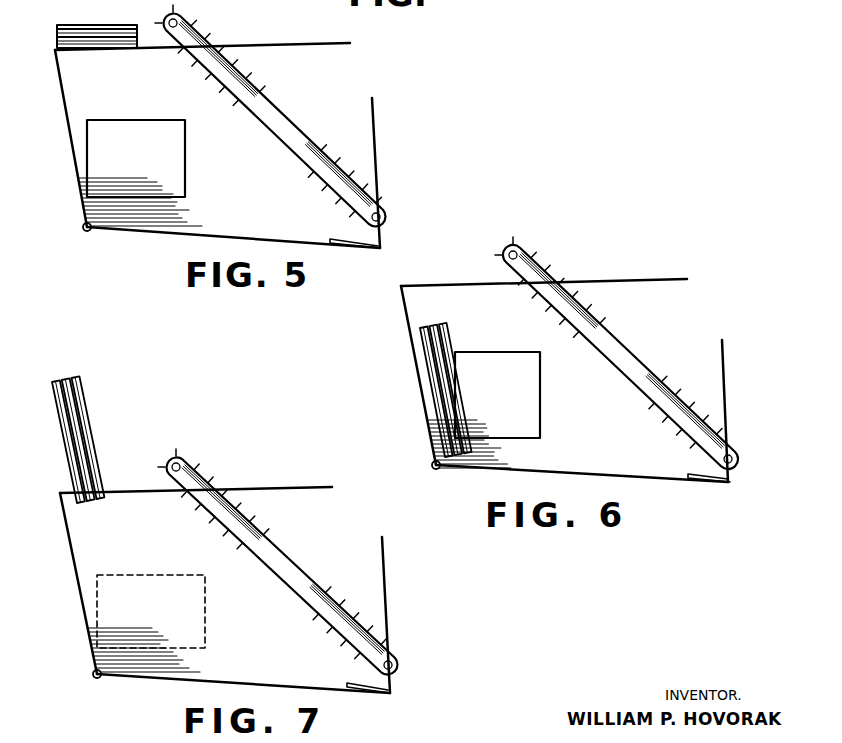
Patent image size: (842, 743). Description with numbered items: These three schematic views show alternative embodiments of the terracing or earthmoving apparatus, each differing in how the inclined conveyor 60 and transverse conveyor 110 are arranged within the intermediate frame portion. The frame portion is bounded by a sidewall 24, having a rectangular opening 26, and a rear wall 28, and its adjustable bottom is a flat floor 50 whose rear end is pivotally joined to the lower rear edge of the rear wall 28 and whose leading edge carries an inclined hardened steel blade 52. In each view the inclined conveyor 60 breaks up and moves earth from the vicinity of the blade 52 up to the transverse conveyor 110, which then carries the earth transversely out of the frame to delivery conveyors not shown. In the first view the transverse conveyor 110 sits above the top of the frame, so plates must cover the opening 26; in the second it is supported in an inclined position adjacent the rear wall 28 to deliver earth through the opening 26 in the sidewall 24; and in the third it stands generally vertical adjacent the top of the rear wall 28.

In FIG. 5, the sidewall 24 is at (266, 185).
In FIG. 6, the sidewall 24 is at (610, 424).
In FIG. 7, the sidewall 24 is at (225, 590).
In FIG. 6, the rectangular opening 26 is at (540, 400).
In FIG. 7, the rectangular opening 26 is at (151, 611).
In FIG. 5, the rear wall 28 is at (70, 137).
In FIG. 6, the rear wall 28 is at (402, 318).
In FIG. 7, the rear wall 28 is at (75, 572).
In FIG. 5, the flat floor 50 is at (246, 237).
In FIG. 6, the flat floor 50 is at (582, 473).
In FIG. 7, the flat floor 50 is at (308, 686).
In FIG. 5, the inclined hardened steel blade 52 is at (355, 243).
In FIG. 6, the inclined hardened steel blade 52 is at (702, 478).
In FIG. 7, the inclined hardened steel blade 52 is at (360, 702).
In FIG. 5, the inclined conveyor 60 is at (293, 118).
In FIG. 6, the inclined conveyor 60 is at (619, 343).
In FIG. 7, the inclined conveyor 60 is at (284, 549).
In FIG. 5, the transverse conveyor 110 is at (80, 25).
In FIG. 6, the transverse conveyor 110 is at (456, 378).
In FIG. 7, the transverse conveyor 110 is at (88, 417).